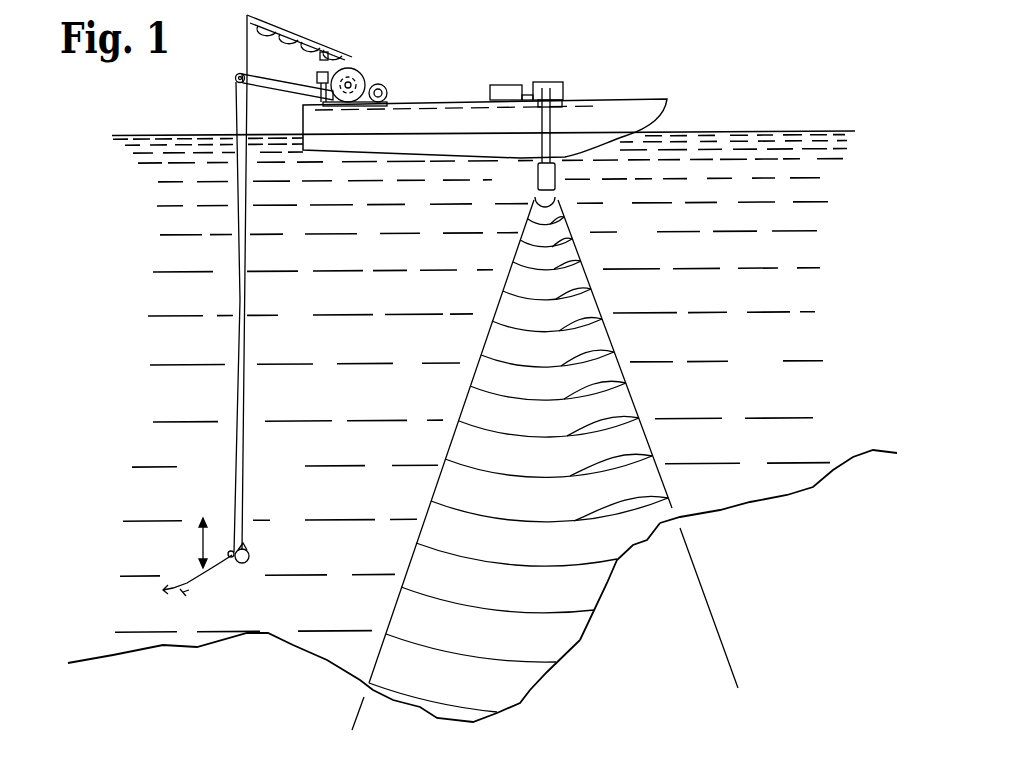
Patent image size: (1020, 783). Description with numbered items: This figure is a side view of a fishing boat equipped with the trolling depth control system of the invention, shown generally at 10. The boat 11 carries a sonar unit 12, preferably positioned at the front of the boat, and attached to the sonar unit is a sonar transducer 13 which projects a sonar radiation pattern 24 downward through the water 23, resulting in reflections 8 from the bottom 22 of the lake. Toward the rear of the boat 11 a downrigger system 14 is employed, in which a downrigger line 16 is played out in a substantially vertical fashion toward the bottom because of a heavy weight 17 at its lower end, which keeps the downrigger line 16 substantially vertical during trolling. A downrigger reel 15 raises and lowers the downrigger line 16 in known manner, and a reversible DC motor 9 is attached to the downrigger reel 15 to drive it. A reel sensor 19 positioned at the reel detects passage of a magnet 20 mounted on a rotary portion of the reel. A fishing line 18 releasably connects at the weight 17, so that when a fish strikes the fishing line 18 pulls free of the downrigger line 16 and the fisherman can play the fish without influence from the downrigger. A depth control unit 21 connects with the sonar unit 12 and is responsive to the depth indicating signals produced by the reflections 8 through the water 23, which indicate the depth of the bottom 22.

The reflections 8 is at (613, 557).
The reversible DC motor 9 is at (387, 90).
The fishing boat equipped with a trolling depth control system 10 is at (613, 43).
The boat 11 is at (637, 102).
The sonar unit 12 is at (560, 85).
The sonar transducer 13 is at (537, 182).
The downrigger system 14 is at (358, 62).
The downrigger reel 15 is at (345, 104).
The downrigger line 16 is at (243, 487).
The weight 17 is at (247, 552).
The fishing line 18 is at (233, 503).
The reel sensor 19 is at (318, 75).
The magnet 20 is at (365, 76).
The depth control unit 21 is at (493, 87).
The bottom 22 is at (723, 511).
The water 23 is at (771, 372).
The sonar radiation pattern 24 is at (477, 367).